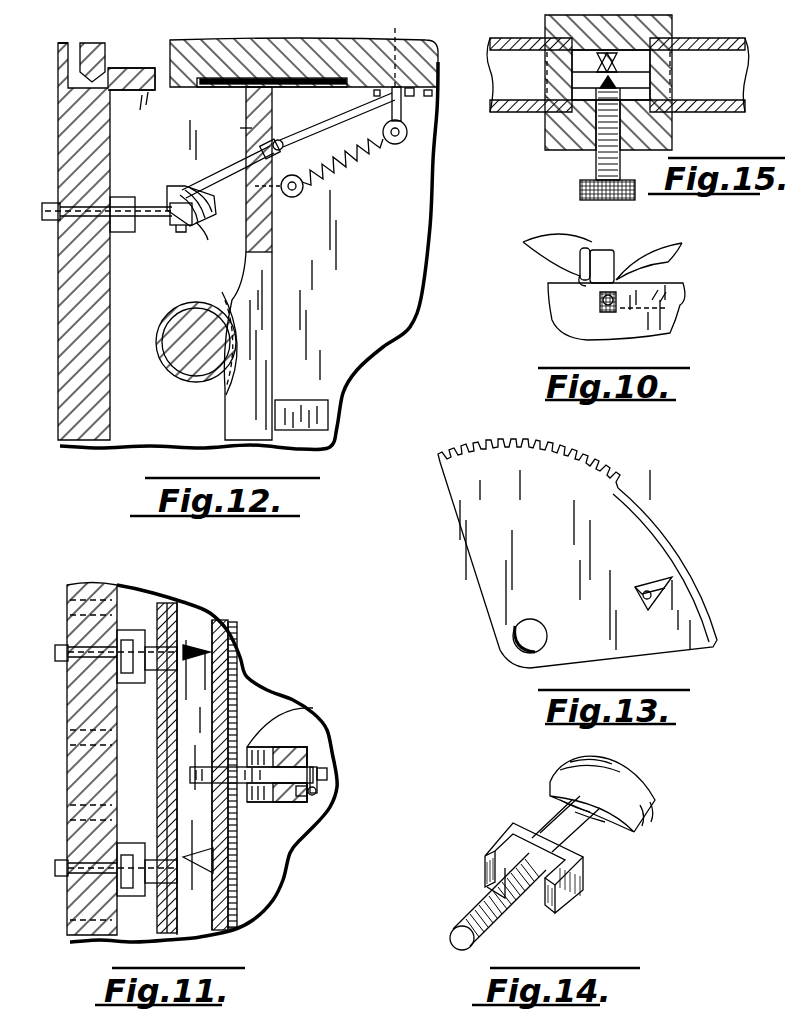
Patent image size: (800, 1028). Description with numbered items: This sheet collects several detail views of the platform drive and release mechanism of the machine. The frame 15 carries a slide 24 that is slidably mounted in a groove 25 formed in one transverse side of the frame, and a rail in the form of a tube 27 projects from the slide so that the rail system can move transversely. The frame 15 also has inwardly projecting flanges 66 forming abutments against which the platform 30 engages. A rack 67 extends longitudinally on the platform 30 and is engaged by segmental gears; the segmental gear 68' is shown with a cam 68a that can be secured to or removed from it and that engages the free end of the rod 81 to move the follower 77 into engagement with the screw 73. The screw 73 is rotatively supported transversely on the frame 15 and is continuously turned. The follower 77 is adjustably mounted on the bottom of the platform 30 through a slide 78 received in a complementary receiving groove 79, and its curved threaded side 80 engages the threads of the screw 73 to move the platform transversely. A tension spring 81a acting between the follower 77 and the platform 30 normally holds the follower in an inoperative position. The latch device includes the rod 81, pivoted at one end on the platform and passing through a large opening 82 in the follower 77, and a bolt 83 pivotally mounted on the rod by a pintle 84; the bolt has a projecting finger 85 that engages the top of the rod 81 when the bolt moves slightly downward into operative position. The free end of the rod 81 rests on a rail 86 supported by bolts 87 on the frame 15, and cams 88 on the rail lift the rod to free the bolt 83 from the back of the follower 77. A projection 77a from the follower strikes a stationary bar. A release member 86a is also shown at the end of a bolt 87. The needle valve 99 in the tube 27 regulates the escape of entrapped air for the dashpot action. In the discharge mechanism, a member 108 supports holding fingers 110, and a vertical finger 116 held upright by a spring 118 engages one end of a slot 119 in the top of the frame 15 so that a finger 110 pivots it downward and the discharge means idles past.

In FIG. 12, the frame 15 is at (64, 148).
In FIG. 10, the frame 15 is at (562, 309).
In FIG. 11, the frame 15 is at (78, 706).
In FIG. 12, the slide 24 is at (90, 48).
In FIG. 12, the groove 25 is at (58, 46).
In FIG. 15, the tube 27 is at (492, 40).
In FIG. 12, the platform 30 is at (236, 40).
In FIG. 12, the inwardly projecting flange 66 is at (132, 72).
In FIG. 12, the rack 67 is at (432, 98).
In FIG. 13, the segmental gear 68' is at (561, 553).
In FIG. 13, the cam 68a is at (658, 592).
In FIG. 12, the screw 73 is at (172, 326).
In FIG. 11, the screw 73 is at (228, 672).
In FIG. 12, the follower 77 is at (266, 304).
In FIG. 11, the follower 77 is at (300, 747).
In FIG. 12, the projection 77a is at (298, 404).
In FIG. 12, the slide 78 is at (236, 88).
In FIG. 12, the receiving groove 79 is at (208, 86).
In FIG. 12, the curved threaded side 80 is at (228, 306).
In FIG. 11, the curved threaded side 80 is at (304, 710).
In FIG. 12, the rod 81 is at (322, 128).
In FIG. 11, the rod 81 is at (327, 774).
In FIG. 12, the tension spring 81a is at (364, 166).
In FIG. 12, the opening 82 is at (246, 133).
In FIG. 11, the opening 82 is at (307, 755).
In FIG. 12, the bolt 83 is at (240, 150).
In FIG. 11, the bolt 83 is at (300, 796).
In FIG. 12, the pintle 84 is at (288, 150).
In FIG. 11, the pintle 84 is at (316, 788).
In FIG. 12, the projecting finger 85 is at (280, 138).
In FIG. 11, the projecting finger 85 is at (316, 794).
In FIG. 12, the rail 86 is at (208, 236).
In FIG. 11, the rail 86 is at (194, 616).
In FIG. 14, the dome nut 86a is at (625, 782).
In FIG. 12, the bolt 87 is at (42, 211).
In FIG. 11, the bolt 87 is at (58, 650).
In FIG. 14, the bolt 87 is at (462, 926).
In FIG. 12, the cam 88 is at (172, 186).
In FIG. 11, the cam 88 is at (230, 638).
In FIG. 15, the needle valve 99 is at (582, 148).
In FIG. 10, the member 108 is at (548, 242).
In FIG. 10, the holding finger 110 is at (580, 262).
In FIG. 10, the vertical finger 116 is at (600, 252).
In FIG. 10, the spring 118 is at (636, 262).
In FIG. 10, the slot 119 is at (662, 288).